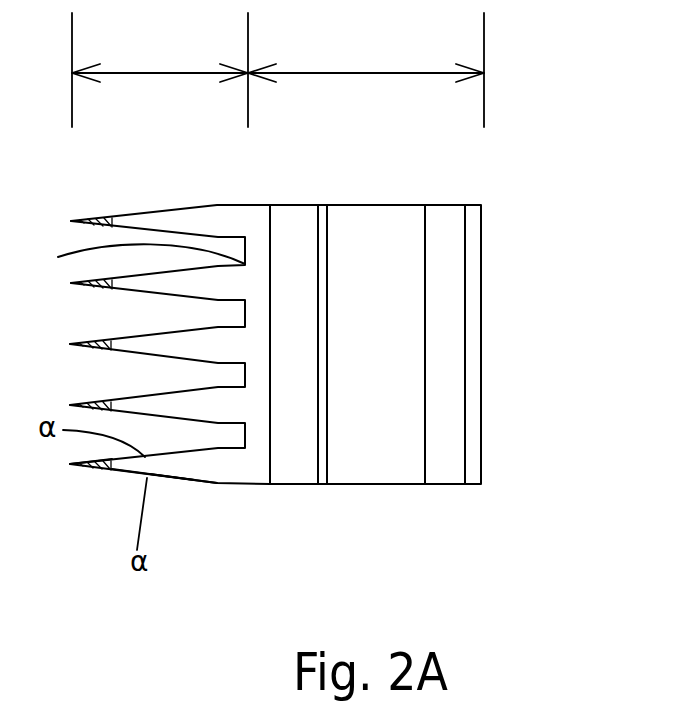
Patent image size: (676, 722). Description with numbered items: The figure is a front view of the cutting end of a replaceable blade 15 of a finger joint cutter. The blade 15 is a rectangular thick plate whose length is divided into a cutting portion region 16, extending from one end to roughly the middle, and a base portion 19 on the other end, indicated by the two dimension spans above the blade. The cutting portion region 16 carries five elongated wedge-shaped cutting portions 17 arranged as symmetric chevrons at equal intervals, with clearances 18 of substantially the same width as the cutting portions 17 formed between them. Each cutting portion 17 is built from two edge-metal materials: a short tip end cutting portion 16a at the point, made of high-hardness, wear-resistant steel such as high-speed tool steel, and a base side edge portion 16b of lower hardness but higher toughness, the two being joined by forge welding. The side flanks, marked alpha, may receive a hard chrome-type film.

The replaceable blade 15 is at (493, 213).
The cutting portion region 16 is at (170, 246).
The tip end cutting portion 16a is at (100, 468).
The base side edge portion 16b is at (192, 467).
The cutting portion 17 is at (170, 480).
The clearance 18 is at (125, 257).
The base portion 19 is at (366, 67).